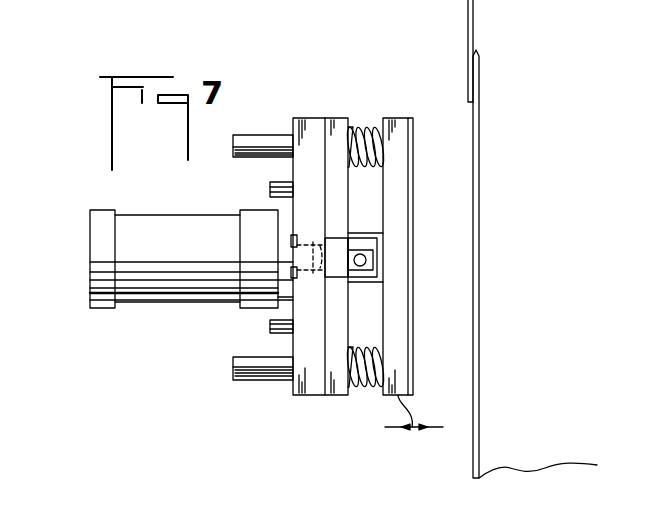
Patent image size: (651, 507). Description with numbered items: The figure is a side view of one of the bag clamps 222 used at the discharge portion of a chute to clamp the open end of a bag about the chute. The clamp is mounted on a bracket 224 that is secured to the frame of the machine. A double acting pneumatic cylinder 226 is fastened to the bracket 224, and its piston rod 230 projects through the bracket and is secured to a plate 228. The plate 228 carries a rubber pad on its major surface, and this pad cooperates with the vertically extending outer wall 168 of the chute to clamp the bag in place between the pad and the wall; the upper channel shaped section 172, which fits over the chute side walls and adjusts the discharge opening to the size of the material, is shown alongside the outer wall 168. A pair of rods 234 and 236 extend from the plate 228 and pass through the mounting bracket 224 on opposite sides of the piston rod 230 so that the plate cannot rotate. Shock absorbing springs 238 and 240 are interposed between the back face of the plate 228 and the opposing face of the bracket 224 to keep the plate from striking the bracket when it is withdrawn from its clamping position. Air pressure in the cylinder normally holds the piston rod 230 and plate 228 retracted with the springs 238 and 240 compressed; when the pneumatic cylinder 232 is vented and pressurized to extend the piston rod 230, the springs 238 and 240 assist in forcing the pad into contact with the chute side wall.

The outer wall 168 is at (480, 286).
The channel shaped section 172 is at (468, 10).
The bag clamp 222 is at (82, 375).
The bracket 224 is at (315, 124).
The double acting pneumatic cylinder 226 is at (190, 249).
The plate 228 is at (392, 206).
The piston rod 230 is at (408, 172).
The pneumatic cylinder 232 is at (43, 4).
The rod 234 is at (233, 365).
The rod 236 is at (245, 137).
The shock absorbing spring 238 is at (367, 384).
The shock absorbing spring 240 is at (367, 127).